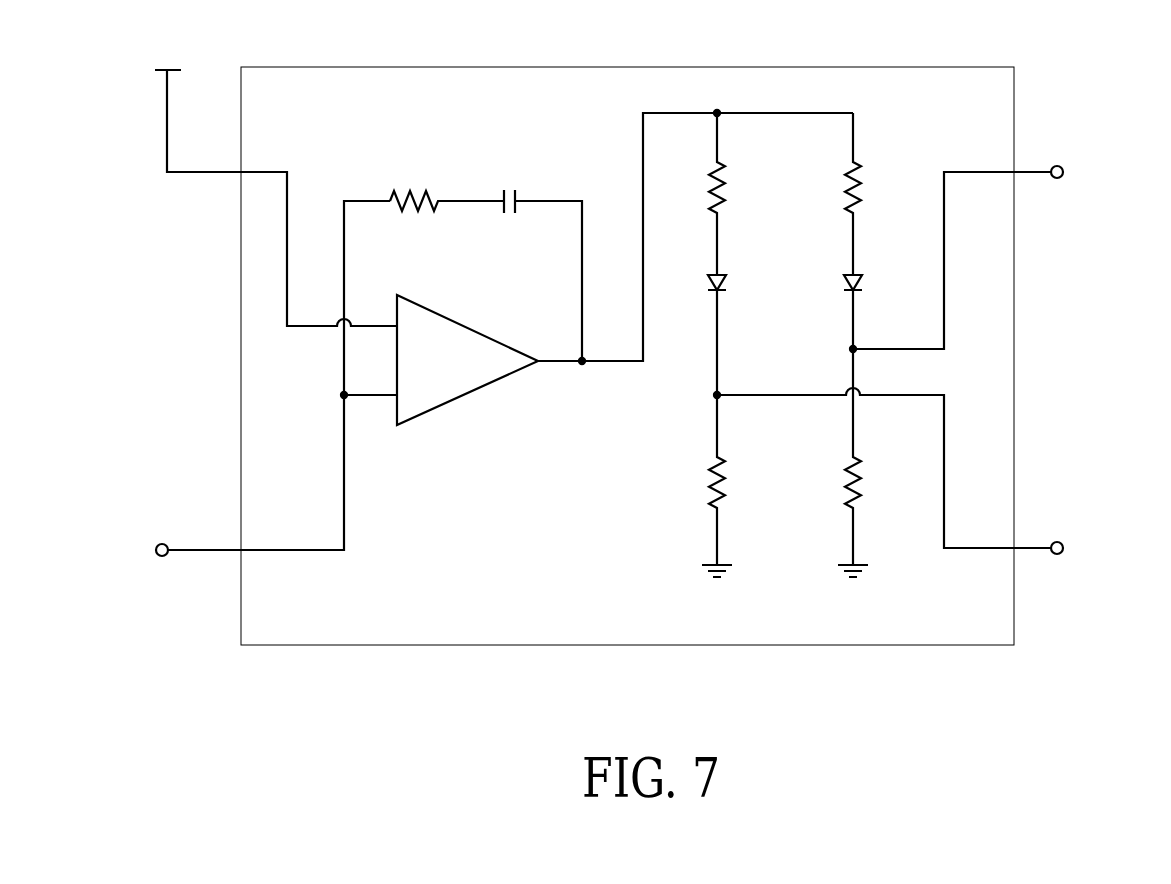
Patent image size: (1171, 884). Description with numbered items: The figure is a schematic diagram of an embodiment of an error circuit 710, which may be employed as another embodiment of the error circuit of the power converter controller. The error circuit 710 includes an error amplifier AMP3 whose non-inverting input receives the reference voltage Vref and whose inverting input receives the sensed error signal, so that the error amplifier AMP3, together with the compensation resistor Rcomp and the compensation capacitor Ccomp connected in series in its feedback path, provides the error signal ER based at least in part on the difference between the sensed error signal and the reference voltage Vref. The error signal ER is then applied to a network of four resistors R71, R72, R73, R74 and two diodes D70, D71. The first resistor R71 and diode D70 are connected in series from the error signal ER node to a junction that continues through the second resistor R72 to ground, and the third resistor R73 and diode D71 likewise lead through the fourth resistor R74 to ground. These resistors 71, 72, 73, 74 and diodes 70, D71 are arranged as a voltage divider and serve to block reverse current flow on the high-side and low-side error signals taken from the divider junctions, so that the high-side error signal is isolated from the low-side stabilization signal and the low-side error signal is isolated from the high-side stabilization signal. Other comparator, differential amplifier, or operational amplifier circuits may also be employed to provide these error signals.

The error circuit 710 is at (737, 67).
The resistor R71 is at (741, 194).
The resistor R72 is at (737, 486).
The resistor R73 is at (877, 194).
The resistor R74 is at (873, 486).
The diode D70 is at (742, 335).
The diode D71 is at (878, 333).
The error amplifier AMP3 is at (467, 360).
The resistor Rcomp is at (442, 187).
The capacitor Ccomp is at (541, 259).
The reference voltage Vref is at (272, 184).
The error signal ER is at (695, 237).
The resistor R71 71 is at (741, 194).
The resistor R72 72 is at (737, 486).
The resistor R73 73 is at (877, 194).
The resistor R74 74 is at (873, 486).
The diode D70 70 is at (742, 335).